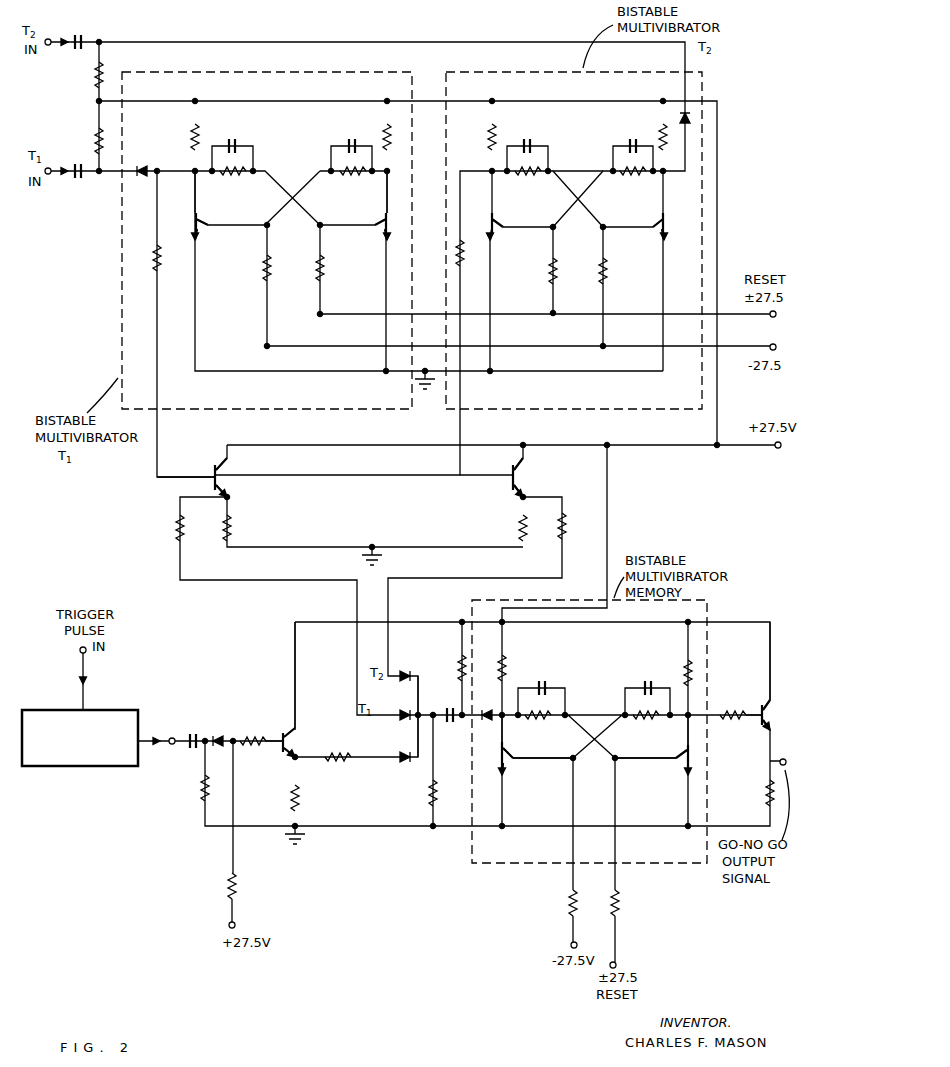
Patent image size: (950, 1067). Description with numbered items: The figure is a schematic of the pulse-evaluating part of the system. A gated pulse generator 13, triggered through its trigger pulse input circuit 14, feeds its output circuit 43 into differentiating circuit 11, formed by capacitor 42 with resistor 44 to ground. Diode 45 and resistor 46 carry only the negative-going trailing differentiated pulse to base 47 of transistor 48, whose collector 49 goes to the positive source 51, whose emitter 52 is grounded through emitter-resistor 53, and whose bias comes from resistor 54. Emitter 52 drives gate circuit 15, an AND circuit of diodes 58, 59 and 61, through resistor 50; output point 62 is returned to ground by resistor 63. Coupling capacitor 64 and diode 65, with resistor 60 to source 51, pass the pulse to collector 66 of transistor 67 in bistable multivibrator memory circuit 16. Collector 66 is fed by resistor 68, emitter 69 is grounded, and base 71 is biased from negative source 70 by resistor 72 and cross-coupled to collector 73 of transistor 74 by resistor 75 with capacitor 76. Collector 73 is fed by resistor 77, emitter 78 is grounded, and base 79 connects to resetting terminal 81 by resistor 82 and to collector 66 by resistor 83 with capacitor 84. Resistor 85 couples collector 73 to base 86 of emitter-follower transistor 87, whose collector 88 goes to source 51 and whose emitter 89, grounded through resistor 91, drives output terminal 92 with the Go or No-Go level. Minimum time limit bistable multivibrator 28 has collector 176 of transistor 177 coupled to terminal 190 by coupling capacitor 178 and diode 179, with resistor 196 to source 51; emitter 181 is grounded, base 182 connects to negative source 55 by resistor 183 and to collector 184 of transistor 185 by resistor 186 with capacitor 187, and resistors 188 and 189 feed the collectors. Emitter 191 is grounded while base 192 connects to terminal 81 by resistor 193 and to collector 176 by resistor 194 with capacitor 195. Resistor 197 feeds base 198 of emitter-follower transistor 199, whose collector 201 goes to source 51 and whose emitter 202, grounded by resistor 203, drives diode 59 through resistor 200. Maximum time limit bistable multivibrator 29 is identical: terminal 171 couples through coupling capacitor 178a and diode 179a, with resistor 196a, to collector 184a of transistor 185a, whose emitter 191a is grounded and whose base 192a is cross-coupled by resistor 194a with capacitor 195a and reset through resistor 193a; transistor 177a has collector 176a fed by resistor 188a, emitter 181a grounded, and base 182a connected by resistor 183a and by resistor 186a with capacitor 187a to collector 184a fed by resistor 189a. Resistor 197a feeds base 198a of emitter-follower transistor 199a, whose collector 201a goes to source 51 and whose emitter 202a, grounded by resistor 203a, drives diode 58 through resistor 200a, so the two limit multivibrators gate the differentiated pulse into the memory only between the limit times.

The differentiating circuit 11 is at (199, 721).
The pulse generator 13 is at (78, 775).
The trigger pulse input circuit 14 is at (78, 652).
The gate circuit 15 is at (441, 644).
The bistable multivibrator memory circuit 16 is at (737, 616).
The minimum time limit bistable multivibrator 28 is at (102, 288).
The maximum time limit bistable multivibrator 29 is at (744, 98).
The capacitor 42 is at (191, 748).
The output circuit 43 is at (170, 736).
The resistor 44 is at (200, 789).
The diode 45 is at (218, 733).
The resistor 46 is at (248, 735).
The base 47 is at (280, 737).
The transistor 48 is at (316, 751).
The collector 49 is at (294, 733).
The resistor 50 is at (332, 753).
The source of positive potential 51 is at (776, 450).
The emitter 52 is at (292, 756).
The emitter-resistor 53 is at (299, 794).
The resistor 54 is at (237, 888).
The source of potential 55 is at (774, 338).
The diode 58 is at (404, 670).
The diode 59 is at (405, 709).
The resistor 60 is at (460, 670).
The diode 61 is at (404, 755).
The output point 62 is at (419, 747).
The resistor 63 is at (428, 793).
The coupling capacitor 64 is at (446, 710).
The diode 65 is at (486, 709).
The collector 66 is at (505, 743).
The transistor 67 is at (500, 766).
The resistor 68 is at (506, 671).
The emitter 69 is at (506, 769).
The −27.5 volt source 70 is at (571, 944).
The base 71 is at (511, 757).
The resistor 72 is at (569, 894).
The collector 73 is at (685, 745).
The transistor 74 is at (708, 768).
The resistor 75 is at (632, 710).
The capacitor 76 is at (645, 685).
The resistor 77 is at (685, 670).
The emitter 78 is at (685, 769).
The base 79 is at (675, 756).
The resetting signal input terminal 81 is at (768, 317).
The resistor 82 is at (620, 896).
The resistor 83 is at (555, 709).
The capacitor 84 is at (544, 685).
The resistor 85 is at (732, 710).
The base 86 is at (760, 710).
The transistor 87 is at (790, 724).
The collector 88 is at (768, 698).
The emitter 89 is at (766, 729).
The resistor 91 is at (765, 797).
The output terminal 92 is at (784, 758).
The maximum time limit pulse output terminal 171 is at (46, 36).
The collector 176 is at (196, 211).
The transistor 177 is at (192, 234).
The coupling capacitor 178 is at (80, 178).
The coupling capacitor 178a is at (80, 34).
The diode 179 is at (141, 167).
The diode 179a is at (694, 118).
The emitter 181 is at (198, 236).
The base 182 is at (203, 222).
The resistor 183 is at (262, 268).
The collector 184 is at (385, 212).
The transistor 185 is at (412, 235).
The resistor 186 is at (346, 177).
The capacitor 187 is at (350, 139).
The resistor 188 is at (190, 135).
The resistor 189 is at (382, 130).
The minimum time limit pulse terminal 190 is at (51, 180).
The emitter 191 is at (384, 240).
The base 192 is at (373, 222).
The resistor 193 is at (316, 268).
The resistor 194 is at (233, 177).
The capacitor 195 is at (231, 139).
The resistor 196 is at (95, 140).
The resistor 196a is at (95, 76).
The resistor 197 is at (154, 268).
The base 198 is at (212, 475).
The emitter-follower transistor 199 is at (247, 489).
The resistor 200 is at (175, 526).
The collector 201 is at (222, 462).
The emitter 202 is at (217, 491).
The resistor 203 is at (232, 531).
The collector 176a is at (495, 211).
The transistor 177a is at (490, 235).
The emitter 181a is at (494, 236).
The base 182a is at (500, 223).
The resistor 183a is at (548, 268).
The collector 184a is at (661, 211).
The transistor 185a is at (695, 235).
The resistor 186a is at (626, 168).
The capacitor 187a is at (631, 139).
The resistor 188a is at (488, 140).
The resistor 189a is at (660, 128).
The emitter 191a is at (659, 240).
The base 192a is at (655, 222).
The resistor 193a is at (608, 268).
The resistor 194a is at (543, 165).
The capacitor 195a is at (525, 139).
The resistor 197a is at (464, 256).
The base 198a is at (511, 476).
The emitter-follower transistor 199a is at (552, 489).
The resistor 200a is at (567, 530).
The collector 201a is at (518, 462).
The emitter 202a is at (515, 495).
The resistor 203a is at (517, 525).